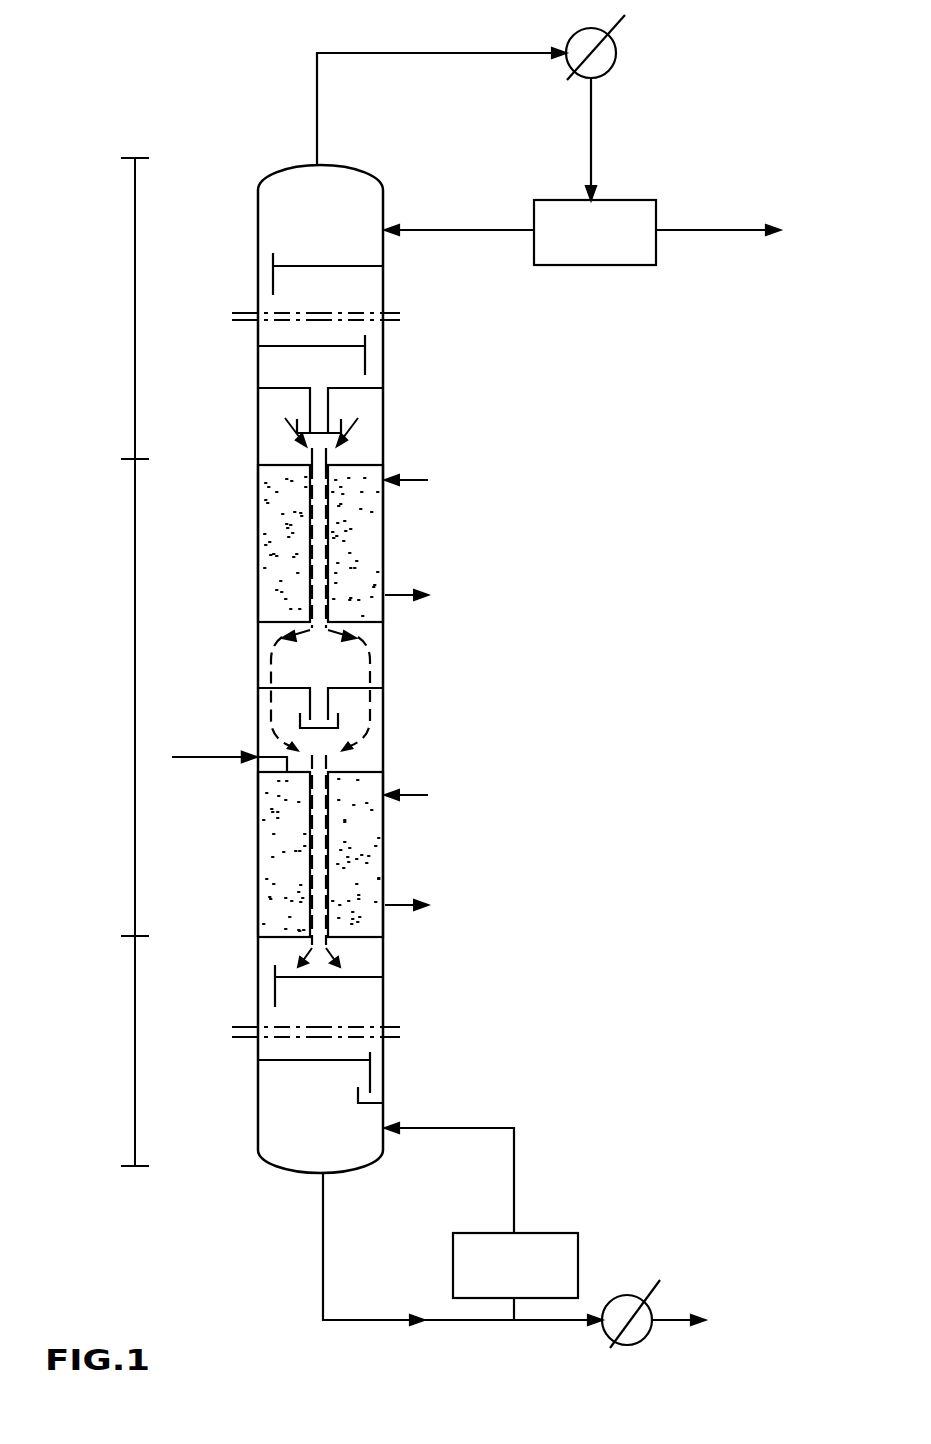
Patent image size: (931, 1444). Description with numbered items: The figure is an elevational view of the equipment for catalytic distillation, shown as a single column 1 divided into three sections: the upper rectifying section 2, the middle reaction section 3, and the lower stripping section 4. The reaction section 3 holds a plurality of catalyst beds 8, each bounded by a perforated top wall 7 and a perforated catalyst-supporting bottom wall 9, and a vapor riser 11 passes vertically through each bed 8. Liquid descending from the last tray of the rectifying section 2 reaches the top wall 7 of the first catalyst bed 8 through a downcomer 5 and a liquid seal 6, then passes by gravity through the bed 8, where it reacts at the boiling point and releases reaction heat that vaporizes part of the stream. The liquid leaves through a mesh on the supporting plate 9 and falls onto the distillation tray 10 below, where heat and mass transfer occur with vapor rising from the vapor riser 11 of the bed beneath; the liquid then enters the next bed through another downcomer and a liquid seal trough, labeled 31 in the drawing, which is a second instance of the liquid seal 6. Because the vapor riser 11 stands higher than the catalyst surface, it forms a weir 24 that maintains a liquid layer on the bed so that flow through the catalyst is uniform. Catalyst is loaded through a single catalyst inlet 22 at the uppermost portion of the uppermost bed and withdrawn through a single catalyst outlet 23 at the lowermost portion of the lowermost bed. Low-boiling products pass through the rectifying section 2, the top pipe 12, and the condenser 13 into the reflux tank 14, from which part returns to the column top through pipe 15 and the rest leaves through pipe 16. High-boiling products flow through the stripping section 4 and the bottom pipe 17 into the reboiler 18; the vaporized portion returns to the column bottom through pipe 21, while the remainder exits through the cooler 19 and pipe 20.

The reactor vessel 1 is at (258, 247).
The rectifying section 2 is at (120, 308).
The reaction section 3 is at (120, 697).
The stripping section 4 is at (120, 1051).
The downcomer 5 is at (290, 400).
The liquid seal 6 is at (290, 432).
The top wall 7 is at (268, 468).
The catalyst bed 8 is at (365, 528).
The bottom wall 9 is at (363, 626).
The distillation tray 10 is at (357, 693).
The vapor riser 11 is at (333, 572).
The top pipe 12 is at (318, 108).
The condenser 13 is at (616, 45).
The reflux tank 14 is at (622, 205).
The pipe 15 is at (470, 230).
The pipe 16 is at (740, 230).
The bottom pipe 17 is at (360, 1320).
The reboiler 18 is at (558, 1240).
The cooler 19 is at (625, 1298).
The pipe 20 is at (680, 1320).
The pipe 21 is at (462, 1128).
The catalyst inlet 22 is at (435, 634).
The catalyst outlet 23 is at (424, 749).
The weir 24 is at (330, 455).
The collection cup 31 is at (340, 720).